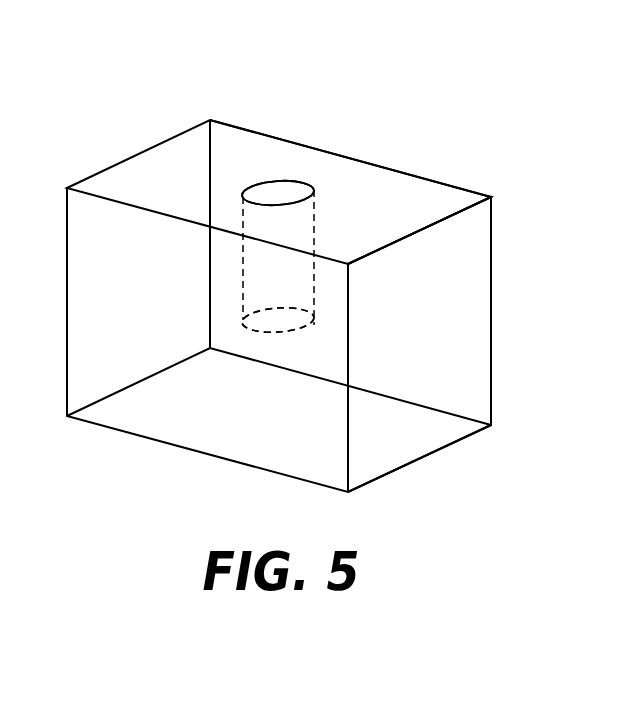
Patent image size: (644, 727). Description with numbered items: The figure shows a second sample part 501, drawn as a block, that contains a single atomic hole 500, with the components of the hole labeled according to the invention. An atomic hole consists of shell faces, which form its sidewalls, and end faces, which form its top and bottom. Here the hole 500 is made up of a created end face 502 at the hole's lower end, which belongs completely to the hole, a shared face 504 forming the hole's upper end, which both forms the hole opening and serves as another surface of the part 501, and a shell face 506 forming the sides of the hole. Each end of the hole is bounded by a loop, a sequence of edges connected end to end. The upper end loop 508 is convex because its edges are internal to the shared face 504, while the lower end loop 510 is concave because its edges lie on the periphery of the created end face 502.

The hole 500 is at (160, 191).
The part 501 is at (509, 280).
The created end face 502 is at (278, 331).
The shared face 504 is at (448, 195).
The shell face 506 is at (280, 188).
The upper end loop 508 is at (305, 183).
The lower end loop 510 is at (317, 332).